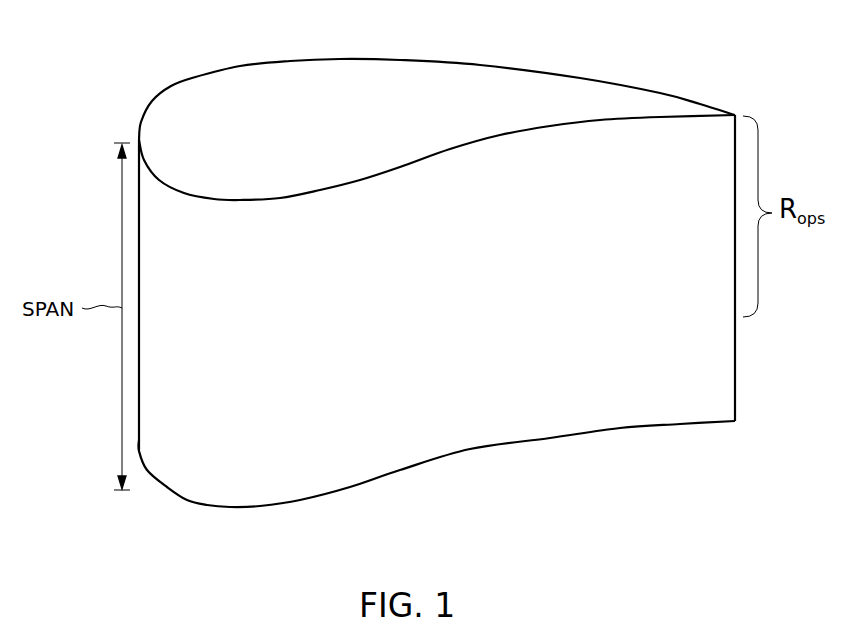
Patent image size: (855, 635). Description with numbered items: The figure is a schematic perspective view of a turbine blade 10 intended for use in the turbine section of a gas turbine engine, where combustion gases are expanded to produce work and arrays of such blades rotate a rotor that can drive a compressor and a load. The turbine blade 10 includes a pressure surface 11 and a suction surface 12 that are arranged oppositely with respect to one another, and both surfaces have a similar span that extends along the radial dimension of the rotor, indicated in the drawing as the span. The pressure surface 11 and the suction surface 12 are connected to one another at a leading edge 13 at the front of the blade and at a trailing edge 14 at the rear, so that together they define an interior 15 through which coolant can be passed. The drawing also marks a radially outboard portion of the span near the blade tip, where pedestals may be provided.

The turbine blade 10 is at (428, 261).
The pressure surface 11 is at (320, 190).
The suction surface 12 is at (481, 64).
The leading edge 13 is at (139, 345).
The trailing edge 14 is at (735, 241).
The interior 15 is at (437, 125).